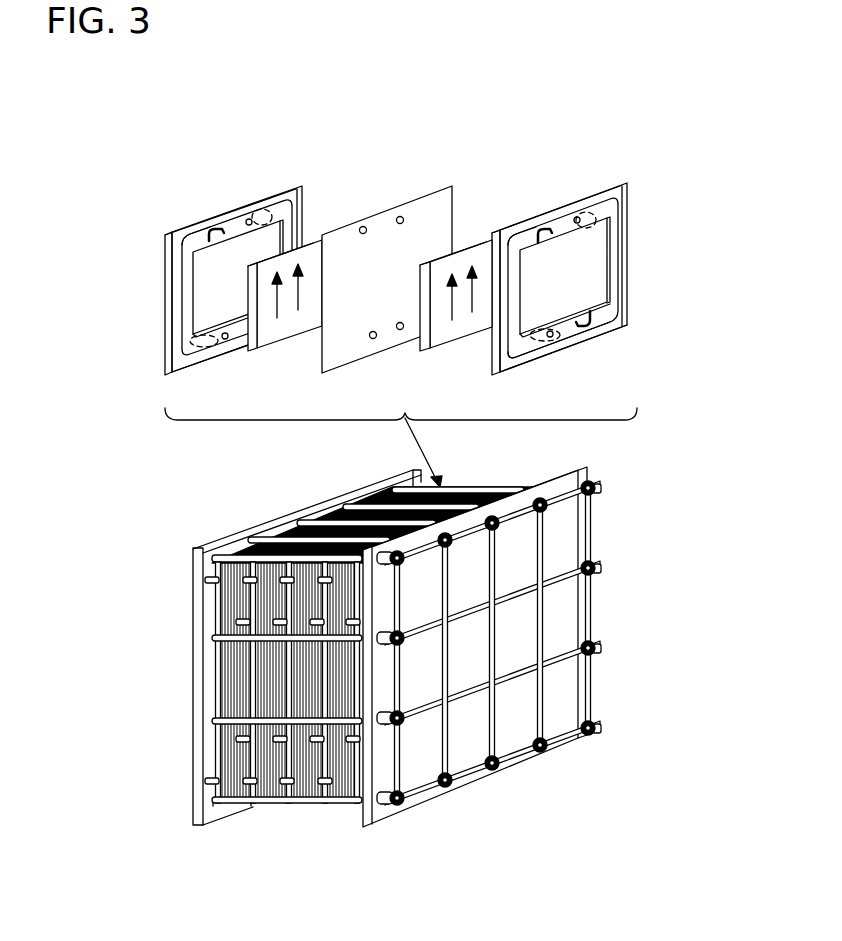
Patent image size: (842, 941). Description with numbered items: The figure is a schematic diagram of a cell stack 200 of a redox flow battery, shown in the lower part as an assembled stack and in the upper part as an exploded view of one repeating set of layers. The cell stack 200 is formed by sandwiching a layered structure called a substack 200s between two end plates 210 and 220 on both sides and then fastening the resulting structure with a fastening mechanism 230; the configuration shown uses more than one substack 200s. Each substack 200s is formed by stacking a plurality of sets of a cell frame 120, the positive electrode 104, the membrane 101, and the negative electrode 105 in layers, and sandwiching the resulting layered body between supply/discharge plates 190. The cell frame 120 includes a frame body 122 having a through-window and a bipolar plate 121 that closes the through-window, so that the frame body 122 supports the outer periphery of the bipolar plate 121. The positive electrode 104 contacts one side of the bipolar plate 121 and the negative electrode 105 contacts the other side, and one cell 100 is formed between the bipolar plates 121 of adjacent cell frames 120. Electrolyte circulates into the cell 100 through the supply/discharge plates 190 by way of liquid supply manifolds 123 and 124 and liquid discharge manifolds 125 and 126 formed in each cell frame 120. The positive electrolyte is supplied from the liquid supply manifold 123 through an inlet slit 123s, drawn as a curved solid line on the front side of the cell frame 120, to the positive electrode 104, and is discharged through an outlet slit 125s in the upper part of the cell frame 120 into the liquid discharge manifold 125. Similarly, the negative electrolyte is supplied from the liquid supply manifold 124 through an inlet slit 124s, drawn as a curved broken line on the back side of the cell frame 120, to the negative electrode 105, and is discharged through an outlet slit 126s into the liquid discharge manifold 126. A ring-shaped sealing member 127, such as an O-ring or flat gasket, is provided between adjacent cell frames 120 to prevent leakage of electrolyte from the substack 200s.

The cell 100 is at (358, 132).
The membrane 101 is at (412, 192).
The positive electrode 104 is at (293, 330).
The negative electrode 105 is at (443, 337).
The cell frame 120 is at (97, 305).
The bipolar plate 121 is at (212, 297).
The frame body 122 is at (168, 288).
The liquid supply manifold 123 is at (612, 330).
The inlet slit 123s is at (593, 316).
The liquid supply manifold 124 is at (225, 339).
The inlet slit 124s is at (190, 345).
The liquid discharge manifold 125 is at (222, 231).
The outlet slit 125s is at (182, 229).
The liquid discharge manifold 126 is at (250, 218).
The outlet slit 126s is at (270, 210).
The sealing member 127 is at (305, 205).
The supply/discharge plate 190 is at (218, 766).
The cell stack 200 is at (598, 616).
The substack 200s is at (215, 808).
The end plate 210 is at (518, 700).
The end plate 220 is at (191, 567).
The fastening mechanism 230 is at (303, 528).